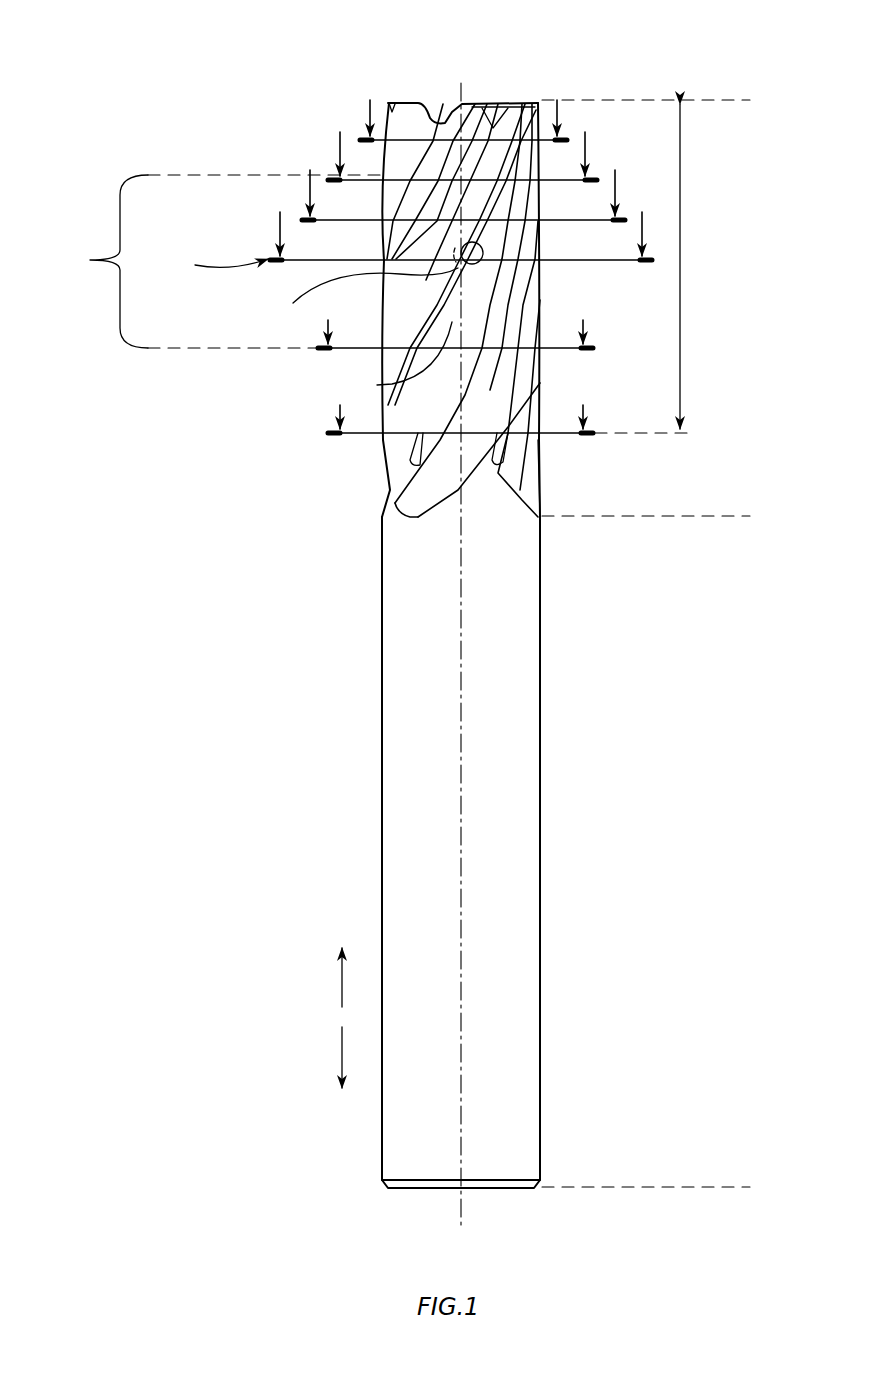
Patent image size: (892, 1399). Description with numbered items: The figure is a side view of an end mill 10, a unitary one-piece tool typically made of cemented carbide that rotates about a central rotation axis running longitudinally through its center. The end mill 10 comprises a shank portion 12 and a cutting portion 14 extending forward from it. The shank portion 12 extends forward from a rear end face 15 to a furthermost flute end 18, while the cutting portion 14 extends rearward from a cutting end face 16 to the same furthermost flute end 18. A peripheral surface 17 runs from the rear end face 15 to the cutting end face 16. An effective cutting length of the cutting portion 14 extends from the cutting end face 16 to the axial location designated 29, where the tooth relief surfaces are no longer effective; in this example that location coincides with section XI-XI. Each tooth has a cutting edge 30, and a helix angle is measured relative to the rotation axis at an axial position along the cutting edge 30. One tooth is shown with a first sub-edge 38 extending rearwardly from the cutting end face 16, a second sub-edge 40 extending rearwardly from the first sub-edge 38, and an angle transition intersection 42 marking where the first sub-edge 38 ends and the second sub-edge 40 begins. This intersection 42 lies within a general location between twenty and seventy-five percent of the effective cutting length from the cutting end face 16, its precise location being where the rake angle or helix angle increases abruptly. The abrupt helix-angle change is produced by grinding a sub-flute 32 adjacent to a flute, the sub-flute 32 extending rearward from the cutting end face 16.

The end mill 10 is at (272, 55).
The shank portion 12 is at (728, 516).
The cutting portion 14 is at (728, 100).
The rear end face 15 is at (428, 1190).
The cutting end face 16 is at (428, 100).
The peripheral surface 17 is at (377, 725).
The furthermost flute end 18 is at (540, 520).
The axial location of end of effective cutting length 29 is at (508, 435).
The cutting edge 30 is at (447, 314).
The sub-flute 32 is at (485, 148).
The first sub-edge 38 is at (523, 196).
The second sub-edge 40 is at (463, 293).
The angle transition intersection 42 is at (478, 270).